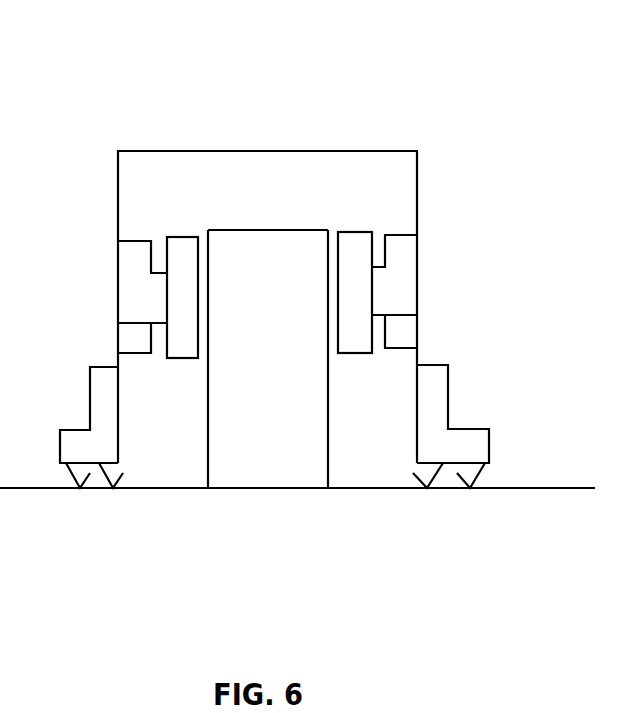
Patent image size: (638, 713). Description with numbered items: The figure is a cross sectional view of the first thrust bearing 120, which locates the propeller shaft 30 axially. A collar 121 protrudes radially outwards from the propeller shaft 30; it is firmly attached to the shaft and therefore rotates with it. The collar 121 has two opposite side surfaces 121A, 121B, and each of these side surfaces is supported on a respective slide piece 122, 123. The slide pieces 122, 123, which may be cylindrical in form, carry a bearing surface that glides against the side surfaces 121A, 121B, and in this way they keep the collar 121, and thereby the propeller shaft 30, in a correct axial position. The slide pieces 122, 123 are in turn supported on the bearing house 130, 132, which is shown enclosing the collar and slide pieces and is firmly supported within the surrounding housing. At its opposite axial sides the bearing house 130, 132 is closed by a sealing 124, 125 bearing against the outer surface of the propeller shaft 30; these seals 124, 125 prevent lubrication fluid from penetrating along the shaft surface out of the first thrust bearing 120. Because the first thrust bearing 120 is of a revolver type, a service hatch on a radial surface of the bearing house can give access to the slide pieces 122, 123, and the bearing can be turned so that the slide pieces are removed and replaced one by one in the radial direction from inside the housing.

The first thrust bearing 120 is at (294, 300).
The collar 121 is at (276, 394).
The side surface 121A is at (328, 442).
The side surface 121B is at (208, 453).
The slide piece 122 is at (345, 245).
The slide piece 123 is at (186, 252).
The sealing 124 is at (435, 395).
The sealing 125 is at (100, 403).
The bearing house 130 is at (337, 307).
The bearing house 132 is at (418, 203).
The propeller shaft 30 is at (553, 487).